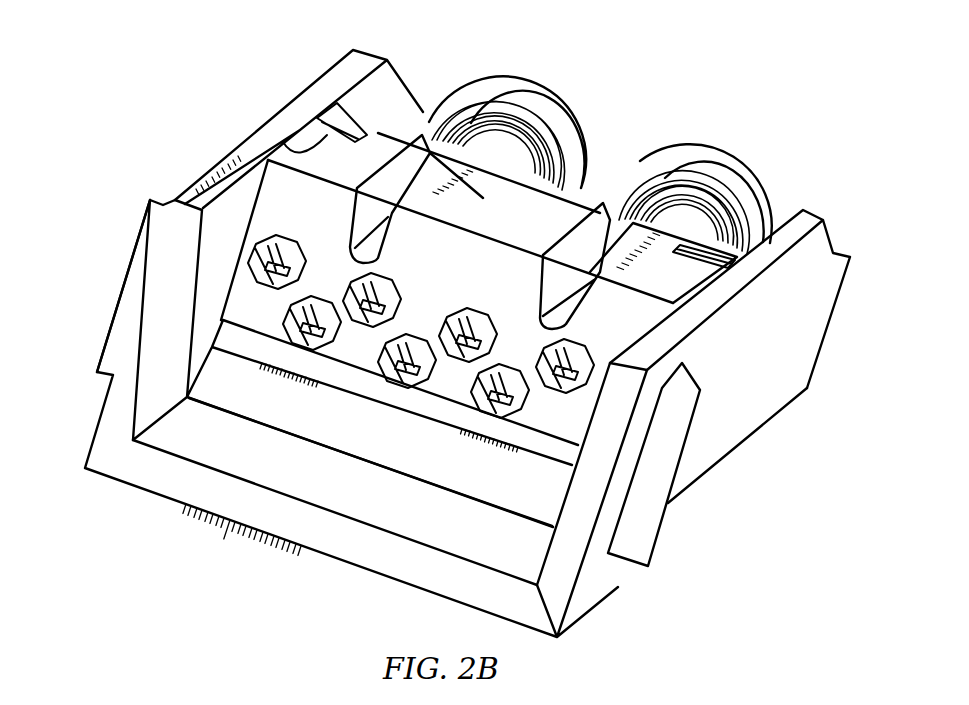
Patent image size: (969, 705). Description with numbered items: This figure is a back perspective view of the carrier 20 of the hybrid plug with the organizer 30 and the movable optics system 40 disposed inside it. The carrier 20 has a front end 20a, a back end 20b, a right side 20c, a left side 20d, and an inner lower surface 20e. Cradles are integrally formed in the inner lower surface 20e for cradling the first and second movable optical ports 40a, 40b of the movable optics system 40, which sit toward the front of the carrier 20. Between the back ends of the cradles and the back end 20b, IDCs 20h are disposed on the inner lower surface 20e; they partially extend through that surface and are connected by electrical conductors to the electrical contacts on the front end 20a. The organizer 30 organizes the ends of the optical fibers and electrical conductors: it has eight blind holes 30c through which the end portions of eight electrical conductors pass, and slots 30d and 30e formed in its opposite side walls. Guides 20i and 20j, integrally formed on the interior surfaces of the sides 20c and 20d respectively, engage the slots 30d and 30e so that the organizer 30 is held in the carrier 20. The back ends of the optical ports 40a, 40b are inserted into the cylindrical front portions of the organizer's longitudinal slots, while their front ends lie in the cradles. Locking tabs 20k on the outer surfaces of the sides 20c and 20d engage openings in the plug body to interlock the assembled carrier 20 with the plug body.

The carrier 20 is at (85, 470).
The front end 20a is at (818, 355).
The back end 20b is at (197, 490).
The right side 20c is at (280, 108).
The left side 20d is at (763, 392).
The inner lower surface 20e is at (458, 537).
The IDCs 20h is at (382, 377).
The guide 20i is at (350, 132).
The guide 20j is at (737, 257).
The locking tabs 20k is at (158, 202).
The organizer 30 is at (545, 210).
The blind holes 30c is at (287, 315).
The slot 30d is at (283, 138).
The slot 30e is at (700, 253).
The movable optics system 40 is at (737, 135).
The first movable optical port 40a is at (490, 83).
The second movable optical port 40b is at (737, 183).